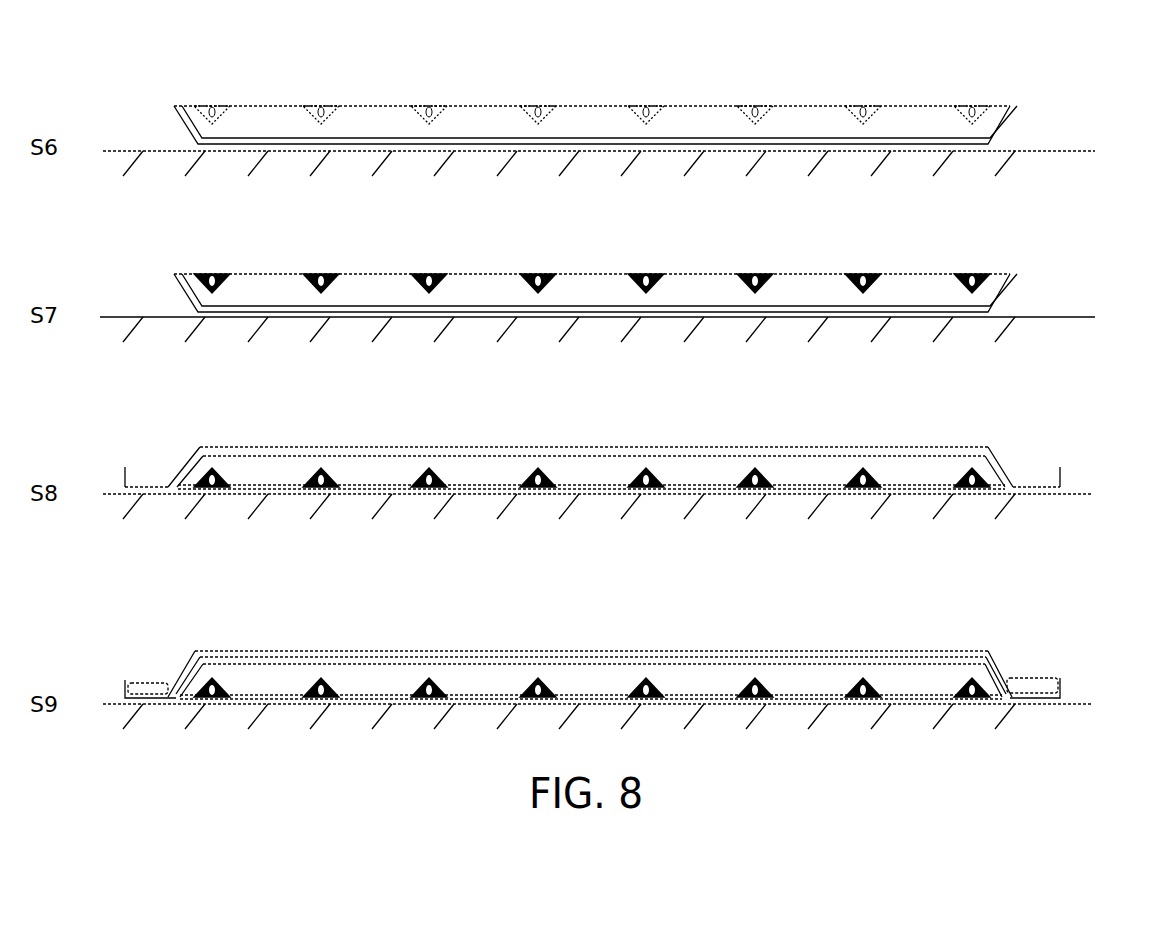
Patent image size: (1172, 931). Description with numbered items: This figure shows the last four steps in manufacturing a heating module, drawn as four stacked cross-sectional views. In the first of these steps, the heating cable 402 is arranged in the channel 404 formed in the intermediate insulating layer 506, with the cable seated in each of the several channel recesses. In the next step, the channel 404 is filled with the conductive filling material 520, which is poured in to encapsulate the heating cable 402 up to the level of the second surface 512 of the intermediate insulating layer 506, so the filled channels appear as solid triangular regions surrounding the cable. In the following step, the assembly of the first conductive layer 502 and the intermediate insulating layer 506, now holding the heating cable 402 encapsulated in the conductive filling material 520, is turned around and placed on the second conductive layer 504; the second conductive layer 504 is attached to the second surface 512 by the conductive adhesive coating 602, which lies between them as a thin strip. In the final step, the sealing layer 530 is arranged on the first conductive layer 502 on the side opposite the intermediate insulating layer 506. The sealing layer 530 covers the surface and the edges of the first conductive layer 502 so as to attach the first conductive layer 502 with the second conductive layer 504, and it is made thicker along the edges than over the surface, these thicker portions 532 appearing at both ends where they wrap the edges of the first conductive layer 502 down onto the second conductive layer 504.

The heating cable 402 is at (970, 112).
The channel 404 is at (980, 114).
The first conductive layer 502 is at (588, 450).
The second conductive layer 504 is at (1062, 478).
The intermediate insulating layer 506 is at (605, 280).
The second surface of the intermediate insulating layer 512 is at (807, 276).
The conductive filling material 520 is at (975, 283).
The sealing layer 530 is at (418, 651).
The thicker portions 532 is at (152, 690).
The conductive adhesive coating 602 is at (952, 488).